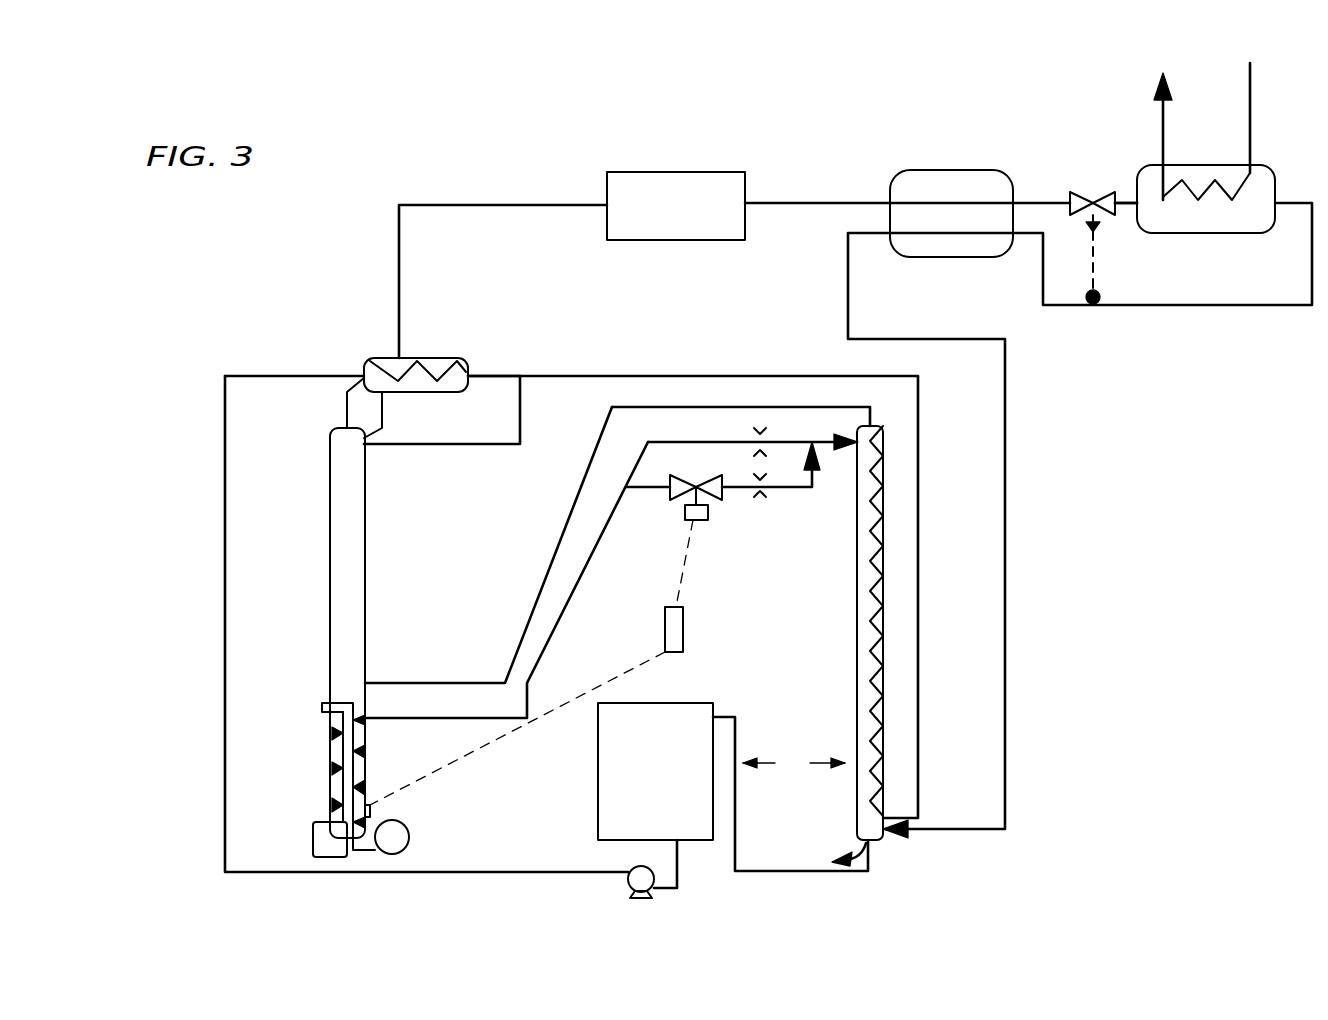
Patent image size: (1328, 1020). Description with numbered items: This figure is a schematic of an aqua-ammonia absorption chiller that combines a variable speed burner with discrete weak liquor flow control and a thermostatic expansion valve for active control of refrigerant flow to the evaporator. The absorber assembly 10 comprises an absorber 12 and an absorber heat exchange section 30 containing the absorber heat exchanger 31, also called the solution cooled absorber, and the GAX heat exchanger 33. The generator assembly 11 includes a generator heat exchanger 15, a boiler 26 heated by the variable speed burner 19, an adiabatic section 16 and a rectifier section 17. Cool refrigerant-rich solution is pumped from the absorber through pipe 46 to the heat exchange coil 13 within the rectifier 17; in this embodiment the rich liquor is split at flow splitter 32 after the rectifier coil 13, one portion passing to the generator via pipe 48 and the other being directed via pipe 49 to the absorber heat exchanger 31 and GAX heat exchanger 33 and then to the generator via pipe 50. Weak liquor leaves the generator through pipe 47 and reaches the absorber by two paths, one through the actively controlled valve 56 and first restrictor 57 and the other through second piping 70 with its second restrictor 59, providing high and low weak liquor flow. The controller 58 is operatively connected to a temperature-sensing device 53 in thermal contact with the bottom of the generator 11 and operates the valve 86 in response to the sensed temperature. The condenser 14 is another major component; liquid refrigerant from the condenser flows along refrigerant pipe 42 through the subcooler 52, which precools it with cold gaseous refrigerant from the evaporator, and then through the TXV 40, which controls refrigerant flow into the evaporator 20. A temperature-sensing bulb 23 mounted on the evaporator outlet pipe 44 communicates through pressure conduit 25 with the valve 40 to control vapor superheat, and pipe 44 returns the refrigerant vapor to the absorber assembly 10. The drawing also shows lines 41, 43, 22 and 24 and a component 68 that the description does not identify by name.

The absorber assembly 10 is at (794, 763).
The generator assembly 11 is at (366, 586).
The absorber 12 is at (680, 703).
The heat exchange coil 13 is at (440, 368).
The condenser 14 is at (694, 172).
The generator heat exchanger 15 is at (368, 760).
The adiabatic section 16 is at (330, 494).
The rectifier section 17 is at (368, 360).
The variable speed burner 19 is at (410, 837).
The evaporator 20 is at (1218, 233).
The evaporator inlet line 22 is at (1254, 105).
The temperature-sensing bulb 23 is at (1101, 294).
The evaporator outlet 24 is at (1162, 124).
The pressure conduit 25 is at (1090, 270).
The boiler 26 is at (330, 752).
The absorber heat exchange section 30 is at (857, 620).
The absorber heat exchanger 31 is at (858, 700).
The flow splitter 32 is at (525, 376).
The GAX heat exchanger 33 is at (870, 555).
The TXV 40 is at (1081, 192).
The refrigerant vapor line 41 is at (457, 200).
The refrigerant pipe 42 is at (795, 203).
The valve outlet line 43 is at (1128, 202).
The pipe 44 is at (1190, 305).
The pipe 46 is at (470, 872).
The pipe 47 is at (556, 628).
The pipe 48 is at (458, 444).
The pipe 49 is at (682, 376).
The pipe 50 is at (560, 548).
The subcooler 52 is at (953, 170).
The temperature-sensing device 53 is at (372, 808).
The valve 56 is at (680, 478).
The first restrictor 57 is at (762, 498).
The controller 58 is at (683, 632).
The second restrictor 59 is at (760, 430).
The pump housing 68 is at (313, 838).
The second piping 70 is at (702, 441).
The valve 86 is at (700, 522).